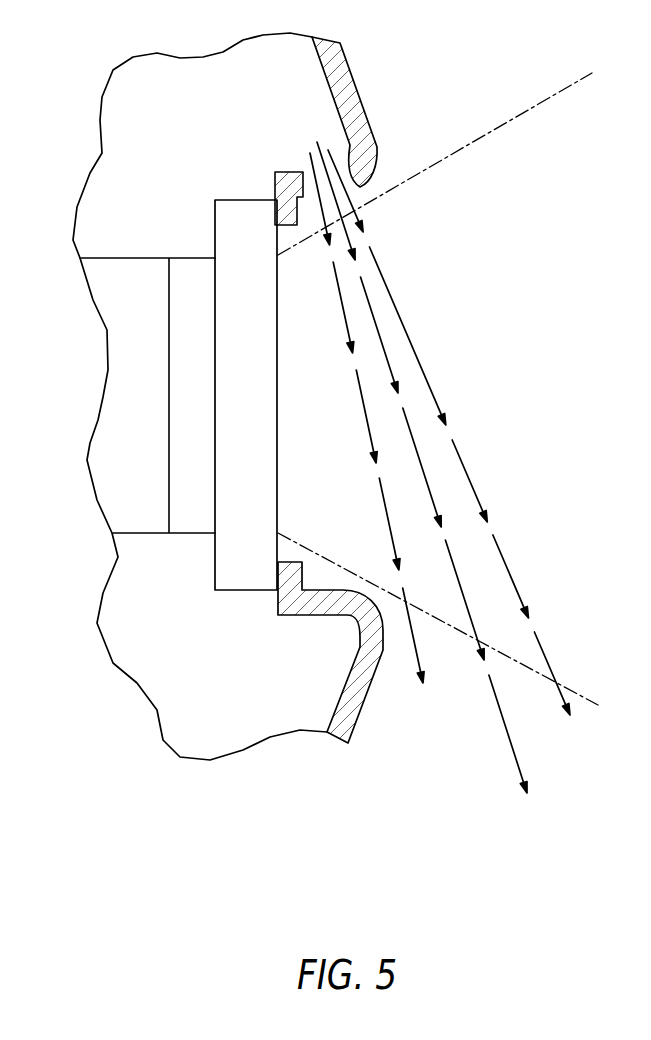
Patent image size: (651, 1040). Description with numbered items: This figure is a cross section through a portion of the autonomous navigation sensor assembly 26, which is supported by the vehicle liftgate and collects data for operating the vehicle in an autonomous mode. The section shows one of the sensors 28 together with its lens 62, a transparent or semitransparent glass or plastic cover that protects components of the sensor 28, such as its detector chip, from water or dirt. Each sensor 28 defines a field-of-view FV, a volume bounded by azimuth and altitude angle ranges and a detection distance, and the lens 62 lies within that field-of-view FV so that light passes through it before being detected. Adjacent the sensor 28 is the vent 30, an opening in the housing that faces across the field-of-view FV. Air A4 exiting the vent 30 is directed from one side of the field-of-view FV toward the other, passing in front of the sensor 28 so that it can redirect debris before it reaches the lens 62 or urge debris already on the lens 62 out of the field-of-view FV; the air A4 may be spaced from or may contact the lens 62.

The autonomous navigation sensor assembly 26 is at (302, 112).
The sensor 28 is at (140, 405).
The vent 30 is at (356, 193).
The lens 62 is at (277, 453).
The air A4 is at (470, 478).
The field-of-view FV is at (500, 128).